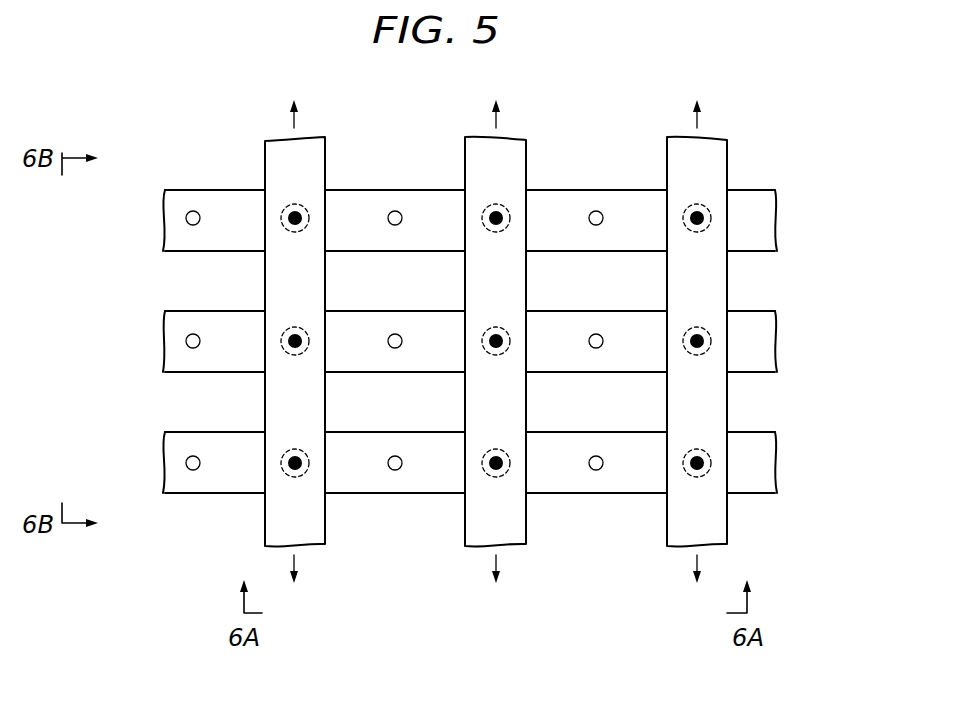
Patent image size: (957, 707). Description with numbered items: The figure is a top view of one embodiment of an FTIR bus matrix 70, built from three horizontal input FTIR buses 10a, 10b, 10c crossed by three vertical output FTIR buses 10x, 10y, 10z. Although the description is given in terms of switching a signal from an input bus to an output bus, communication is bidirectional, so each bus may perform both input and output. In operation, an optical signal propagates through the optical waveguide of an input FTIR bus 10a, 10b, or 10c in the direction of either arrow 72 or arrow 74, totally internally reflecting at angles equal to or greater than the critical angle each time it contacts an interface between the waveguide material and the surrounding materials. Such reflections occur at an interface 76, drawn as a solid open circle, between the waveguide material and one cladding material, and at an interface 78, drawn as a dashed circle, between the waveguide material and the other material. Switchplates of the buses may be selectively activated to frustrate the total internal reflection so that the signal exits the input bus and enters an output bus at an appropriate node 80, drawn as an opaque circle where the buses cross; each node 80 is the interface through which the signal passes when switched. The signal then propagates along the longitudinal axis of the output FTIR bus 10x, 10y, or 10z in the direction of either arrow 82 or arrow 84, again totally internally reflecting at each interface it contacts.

The FTIR bus matrix 70 is at (778, 70).
The arrow 72 is at (142, 218).
The arrow 74 is at (798, 221).
The interface 76 is at (596, 211).
The interface 78 is at (698, 204).
The node 80 is at (696, 226).
The arrow 82 is at (495, 99).
The arrow 84 is at (495, 585).
The input FTIR bus 10a is at (152, 239).
The input FTIR bus 10b is at (152, 360).
The input FTIR bus 10c is at (152, 480).
The output FTIR bus 10x is at (337, 146).
The output FTIR bus 10y is at (539, 146).
The output FTIR bus 10z is at (740, 146).